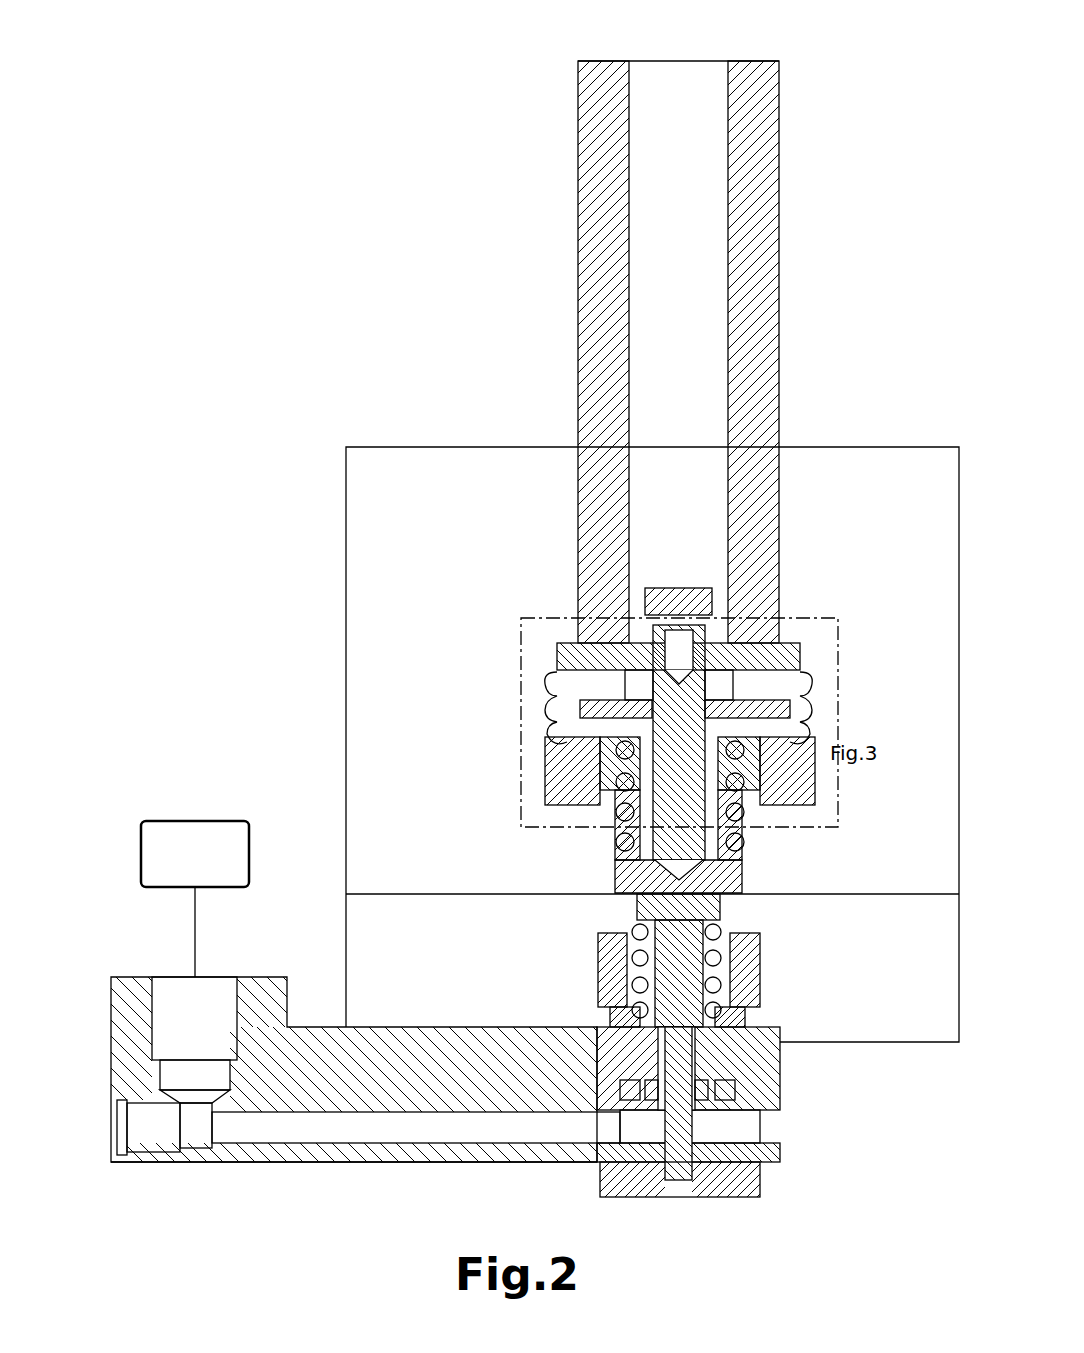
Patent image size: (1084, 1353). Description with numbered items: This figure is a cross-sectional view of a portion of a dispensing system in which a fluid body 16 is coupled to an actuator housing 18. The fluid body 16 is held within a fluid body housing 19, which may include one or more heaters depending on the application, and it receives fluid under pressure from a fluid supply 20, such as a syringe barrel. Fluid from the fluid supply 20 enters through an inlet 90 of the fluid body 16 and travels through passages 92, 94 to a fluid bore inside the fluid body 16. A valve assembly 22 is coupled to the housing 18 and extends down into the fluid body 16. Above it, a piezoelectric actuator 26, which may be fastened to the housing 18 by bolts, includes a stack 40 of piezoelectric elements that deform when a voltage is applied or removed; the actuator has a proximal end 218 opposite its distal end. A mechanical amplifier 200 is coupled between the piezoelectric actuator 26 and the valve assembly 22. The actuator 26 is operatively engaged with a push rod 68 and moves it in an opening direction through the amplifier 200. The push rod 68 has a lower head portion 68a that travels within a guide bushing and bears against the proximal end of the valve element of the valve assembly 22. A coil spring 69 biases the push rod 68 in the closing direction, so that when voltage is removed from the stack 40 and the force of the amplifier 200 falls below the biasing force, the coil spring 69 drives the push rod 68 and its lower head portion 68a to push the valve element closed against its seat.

The fluid body 16 is at (130, 1025).
The actuator housing 18 is at (837, 447).
The fluid body housing 19 is at (408, 1162).
The fluid supply 20 is at (163, 820).
The valve assembly 22 is at (725, 1040).
The piezoelectric actuator 26 is at (848, 626).
The stack of piezoelectric elements 40 is at (755, 262).
The push rod 68 is at (683, 770).
The lower head portion 68a is at (618, 886).
The coil spring 69 is at (625, 818).
The inlet 90 is at (180, 978).
The passage 92 is at (192, 1030).
The passage 94 is at (347, 1125).
The mechanical amplifier 200 is at (800, 712).
The proximal end 218 is at (752, 62).